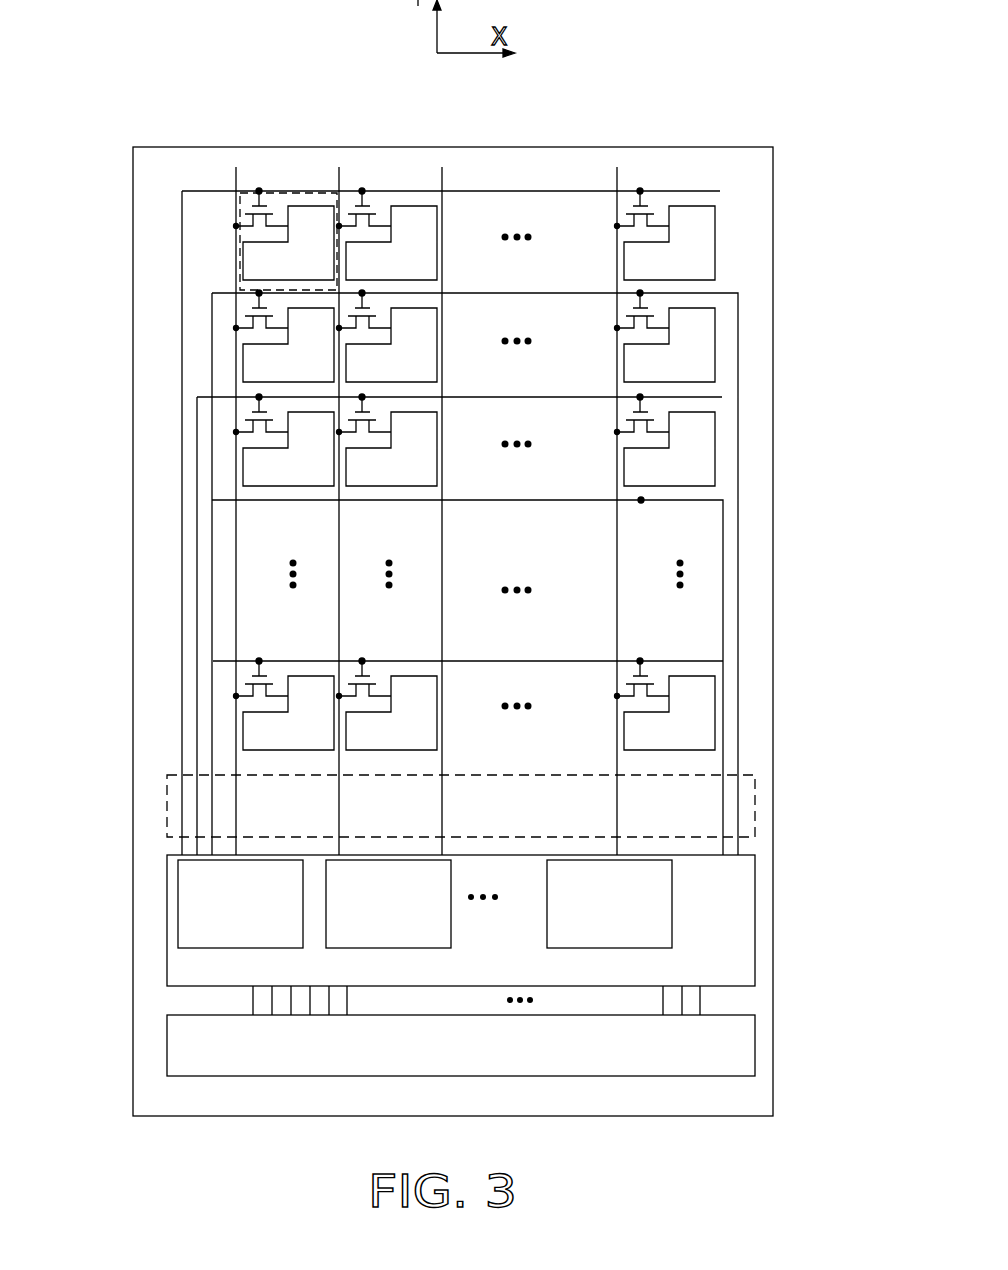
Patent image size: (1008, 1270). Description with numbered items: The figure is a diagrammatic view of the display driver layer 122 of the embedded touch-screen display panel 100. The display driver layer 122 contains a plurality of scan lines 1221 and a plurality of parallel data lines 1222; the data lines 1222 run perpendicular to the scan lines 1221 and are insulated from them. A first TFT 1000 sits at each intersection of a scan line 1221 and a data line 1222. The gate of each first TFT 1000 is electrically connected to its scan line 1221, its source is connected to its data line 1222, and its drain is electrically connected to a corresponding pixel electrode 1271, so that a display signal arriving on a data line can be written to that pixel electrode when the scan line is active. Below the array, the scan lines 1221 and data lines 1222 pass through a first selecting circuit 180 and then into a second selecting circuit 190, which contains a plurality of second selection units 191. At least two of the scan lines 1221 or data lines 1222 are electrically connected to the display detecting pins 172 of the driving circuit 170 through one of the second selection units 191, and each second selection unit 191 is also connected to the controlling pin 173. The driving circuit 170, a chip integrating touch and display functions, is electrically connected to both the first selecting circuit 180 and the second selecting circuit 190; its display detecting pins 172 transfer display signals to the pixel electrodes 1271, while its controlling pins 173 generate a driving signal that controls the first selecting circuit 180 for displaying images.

The embedded touch-screen display panel 100 is at (203, 86).
The display driver layer 122 is at (520, 160).
The data line 1222 is at (617, 178).
The scan line 1221 is at (712, 190).
The first TFT 1000 is at (648, 313).
The pixel electrode 1271 is at (700, 360).
The first selecting circuit 180 is at (755, 805).
The second selecting circuit 190 is at (755, 933).
The second selection unit 191 is at (672, 895).
The display detecting pin 172 is at (700, 1000).
The controlling pin 173 is at (253, 1000).
The driving circuit 170 is at (756, 1044).